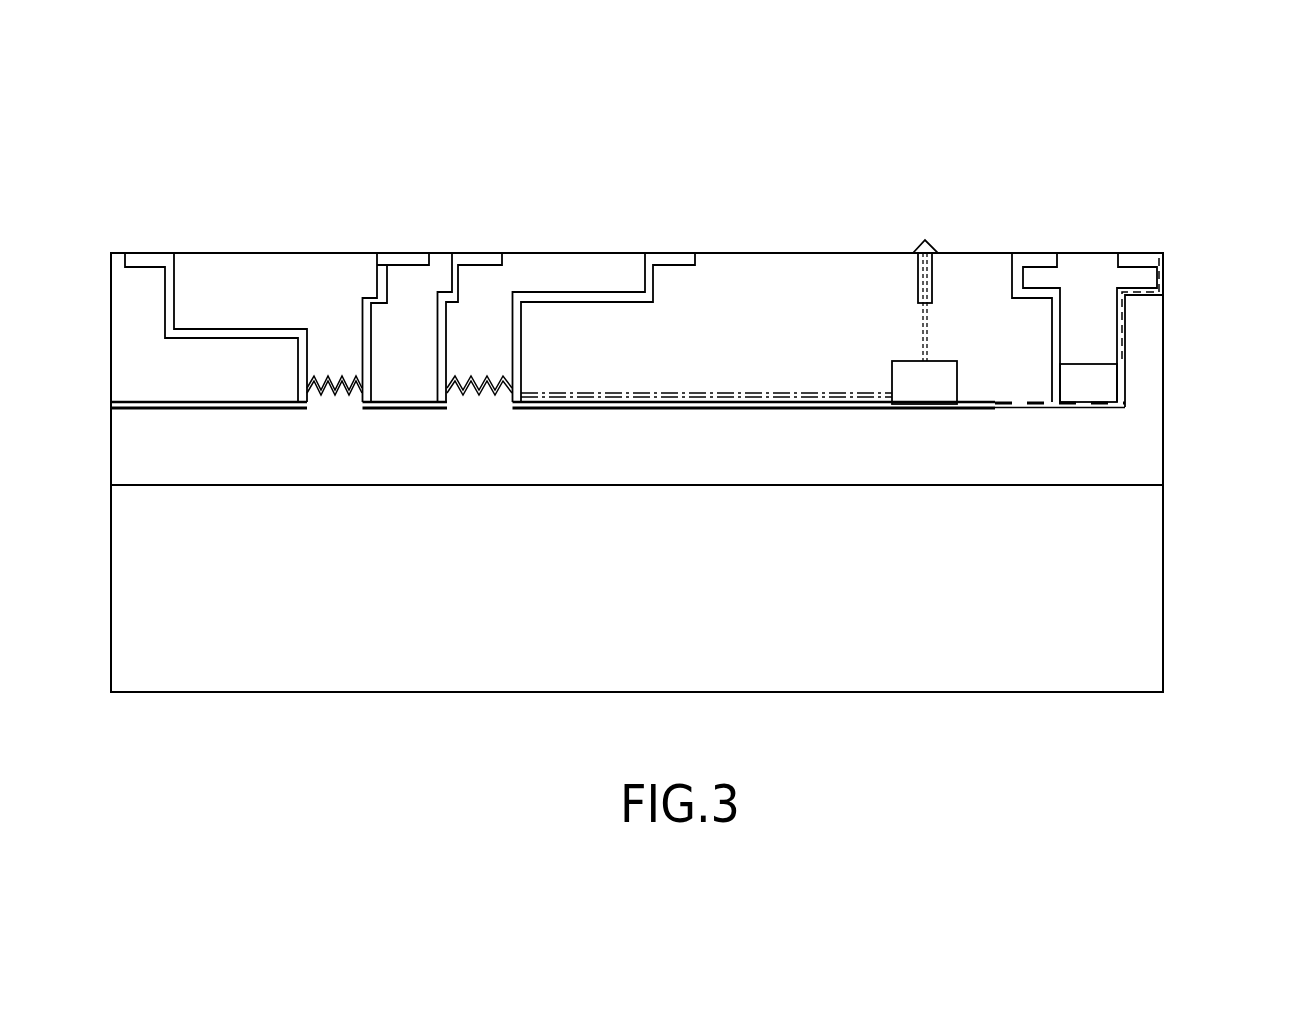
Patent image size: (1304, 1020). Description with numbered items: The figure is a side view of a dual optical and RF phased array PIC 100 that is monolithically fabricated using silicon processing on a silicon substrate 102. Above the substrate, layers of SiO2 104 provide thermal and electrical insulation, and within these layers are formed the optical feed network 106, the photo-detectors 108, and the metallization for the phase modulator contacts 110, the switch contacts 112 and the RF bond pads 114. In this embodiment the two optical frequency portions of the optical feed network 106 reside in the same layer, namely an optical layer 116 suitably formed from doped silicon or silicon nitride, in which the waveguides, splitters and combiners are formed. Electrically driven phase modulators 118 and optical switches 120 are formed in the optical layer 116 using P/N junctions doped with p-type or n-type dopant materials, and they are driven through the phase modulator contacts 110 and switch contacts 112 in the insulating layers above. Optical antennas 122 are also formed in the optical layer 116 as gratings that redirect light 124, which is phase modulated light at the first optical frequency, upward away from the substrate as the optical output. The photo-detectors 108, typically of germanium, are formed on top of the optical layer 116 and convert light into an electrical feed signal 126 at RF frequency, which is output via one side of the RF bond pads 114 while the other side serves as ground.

The dual optical and RF phased array PIC 100 is at (1196, 76).
The silicon substrate 102 is at (1148, 578).
The layers of SiO2 104 is at (766, 350).
The optical feed network 106 is at (175, 430).
The photo-detectors 108 is at (1045, 375).
The phase modulator contacts 110 is at (368, 237).
The switch contacts 112 is at (652, 238).
The RF bond pads 114 is at (1128, 250).
The optical layer 116 is at (103, 390).
The phase modulators 118 is at (325, 360).
The optical switches 120 is at (478, 355).
The optical antennas 122 is at (892, 372).
The light 124 is at (905, 243).
The electrical feed signal 126 is at (1175, 286).